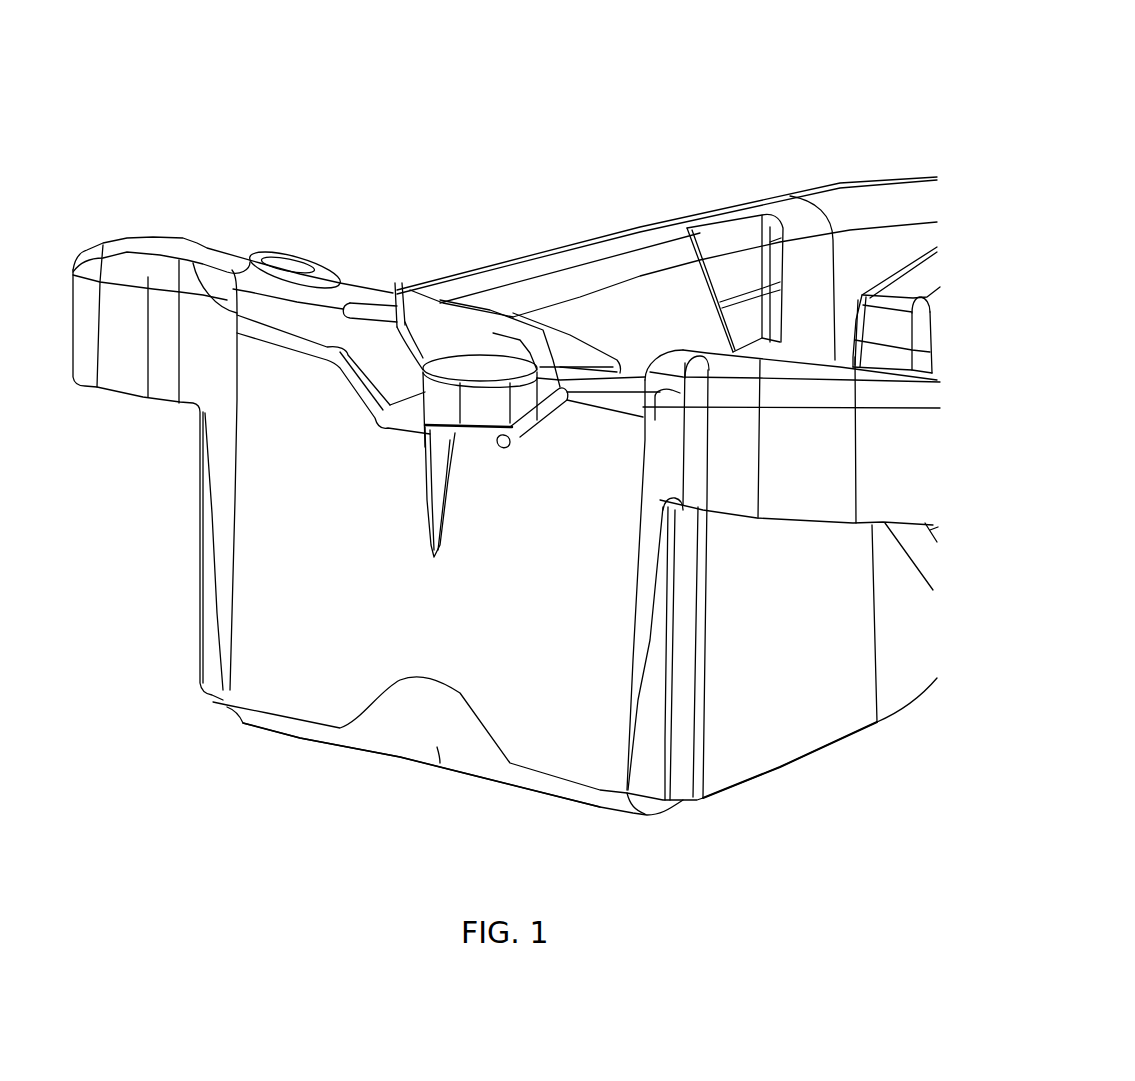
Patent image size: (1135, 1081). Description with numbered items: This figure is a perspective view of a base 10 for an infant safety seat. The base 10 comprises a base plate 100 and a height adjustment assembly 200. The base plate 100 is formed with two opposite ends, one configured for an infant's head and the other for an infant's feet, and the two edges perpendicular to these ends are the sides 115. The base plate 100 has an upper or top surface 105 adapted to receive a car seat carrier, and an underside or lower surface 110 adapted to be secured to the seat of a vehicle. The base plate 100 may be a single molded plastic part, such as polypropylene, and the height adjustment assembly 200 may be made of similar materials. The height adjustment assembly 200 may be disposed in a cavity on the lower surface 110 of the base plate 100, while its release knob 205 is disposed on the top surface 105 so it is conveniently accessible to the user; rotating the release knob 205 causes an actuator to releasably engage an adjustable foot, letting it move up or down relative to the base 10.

The base 10 is at (180, 150).
The base plate 100 is at (245, 516).
The top surface 105 is at (607, 255).
The lower surface 110 is at (737, 800).
The sides 115 is at (768, 640).
The height adjustment assembly 200 is at (383, 747).
The release knob 205 is at (478, 400).